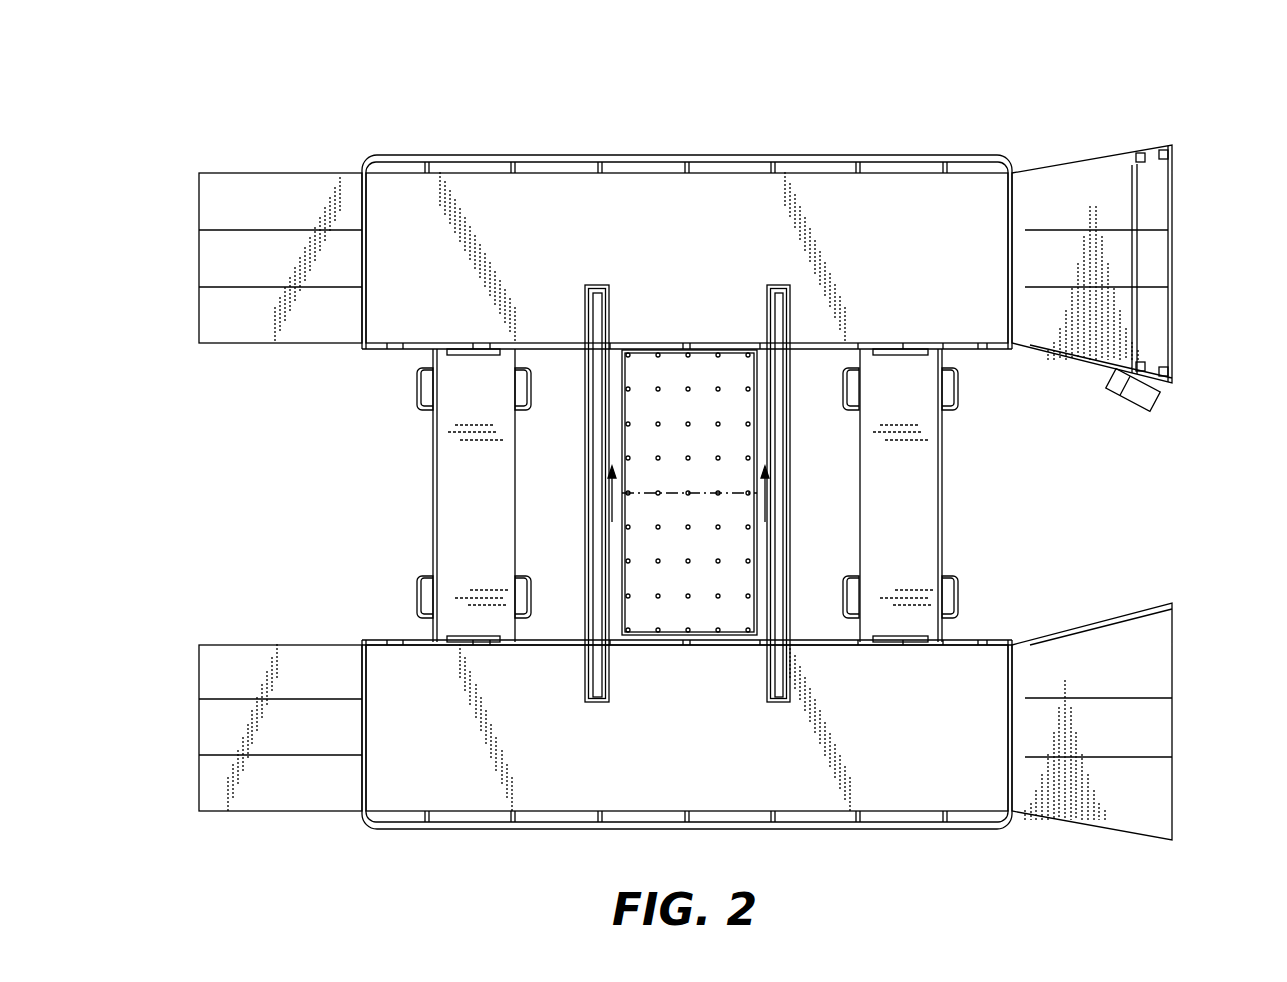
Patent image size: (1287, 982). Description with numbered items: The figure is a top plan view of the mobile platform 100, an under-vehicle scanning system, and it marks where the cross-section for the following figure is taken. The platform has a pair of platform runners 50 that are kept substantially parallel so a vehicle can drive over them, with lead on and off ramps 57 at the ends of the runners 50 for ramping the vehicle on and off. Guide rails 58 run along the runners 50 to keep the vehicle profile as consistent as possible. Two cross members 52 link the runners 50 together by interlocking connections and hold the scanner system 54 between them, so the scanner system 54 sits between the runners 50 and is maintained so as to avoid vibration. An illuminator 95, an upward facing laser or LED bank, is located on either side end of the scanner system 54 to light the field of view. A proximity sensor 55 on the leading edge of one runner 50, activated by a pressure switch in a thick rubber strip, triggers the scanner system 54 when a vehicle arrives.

The mobile platform 100 is at (803, 82).
The platform runners 50 is at (948, 212).
The cross members 52 is at (457, 478).
The scanner system 54 is at (645, 376).
The proximity sensor 55 is at (1168, 398).
The lead on and off ramps 57 is at (270, 287).
The guide rails 58 is at (480, 157).
The illuminator 95 is at (596, 510).